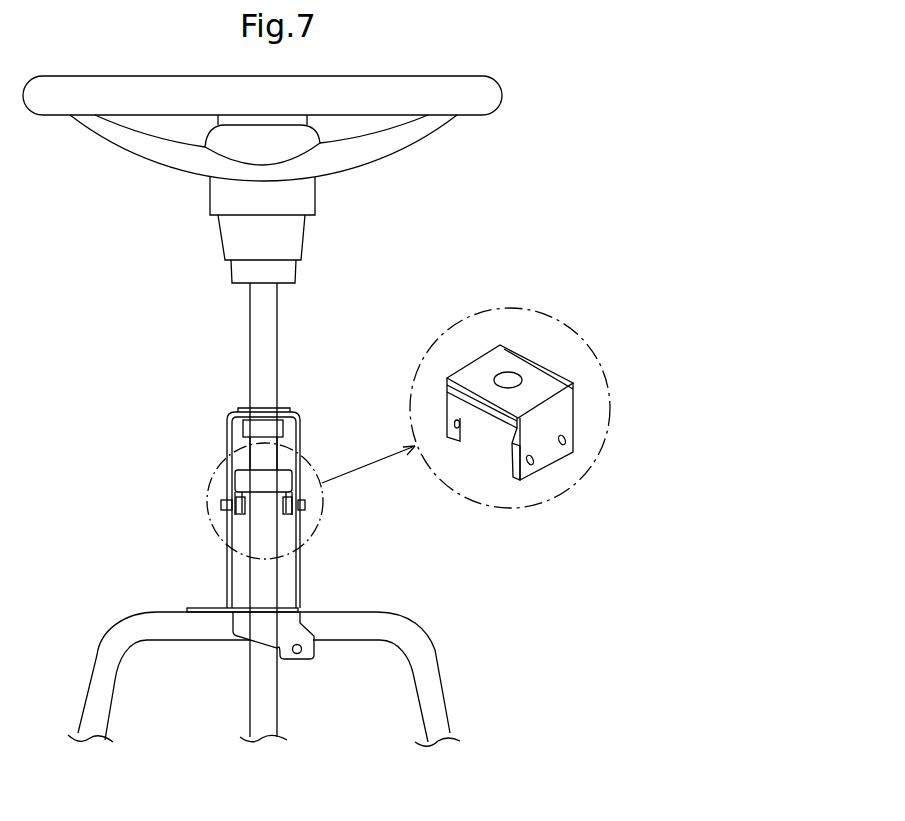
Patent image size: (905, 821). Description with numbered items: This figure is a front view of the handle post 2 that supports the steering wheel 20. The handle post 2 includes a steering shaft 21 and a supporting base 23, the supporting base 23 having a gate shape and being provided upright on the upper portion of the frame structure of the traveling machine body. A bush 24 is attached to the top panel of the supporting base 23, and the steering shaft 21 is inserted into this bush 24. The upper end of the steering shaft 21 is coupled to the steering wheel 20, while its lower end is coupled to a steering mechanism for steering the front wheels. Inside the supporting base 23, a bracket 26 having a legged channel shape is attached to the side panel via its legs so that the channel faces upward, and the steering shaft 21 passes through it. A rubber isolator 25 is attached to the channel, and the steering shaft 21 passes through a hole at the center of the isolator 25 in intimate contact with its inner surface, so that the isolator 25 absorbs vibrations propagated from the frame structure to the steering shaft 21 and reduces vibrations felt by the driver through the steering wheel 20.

The handle post 2 is at (443, 683).
The steering wheel 20 is at (480, 97).
The steering shaft 21 is at (262, 328).
The supporting base 23 is at (227, 582).
The bush 24 is at (270, 426).
The isolator 25 is at (243, 462).
The bracket 26 is at (262, 482).